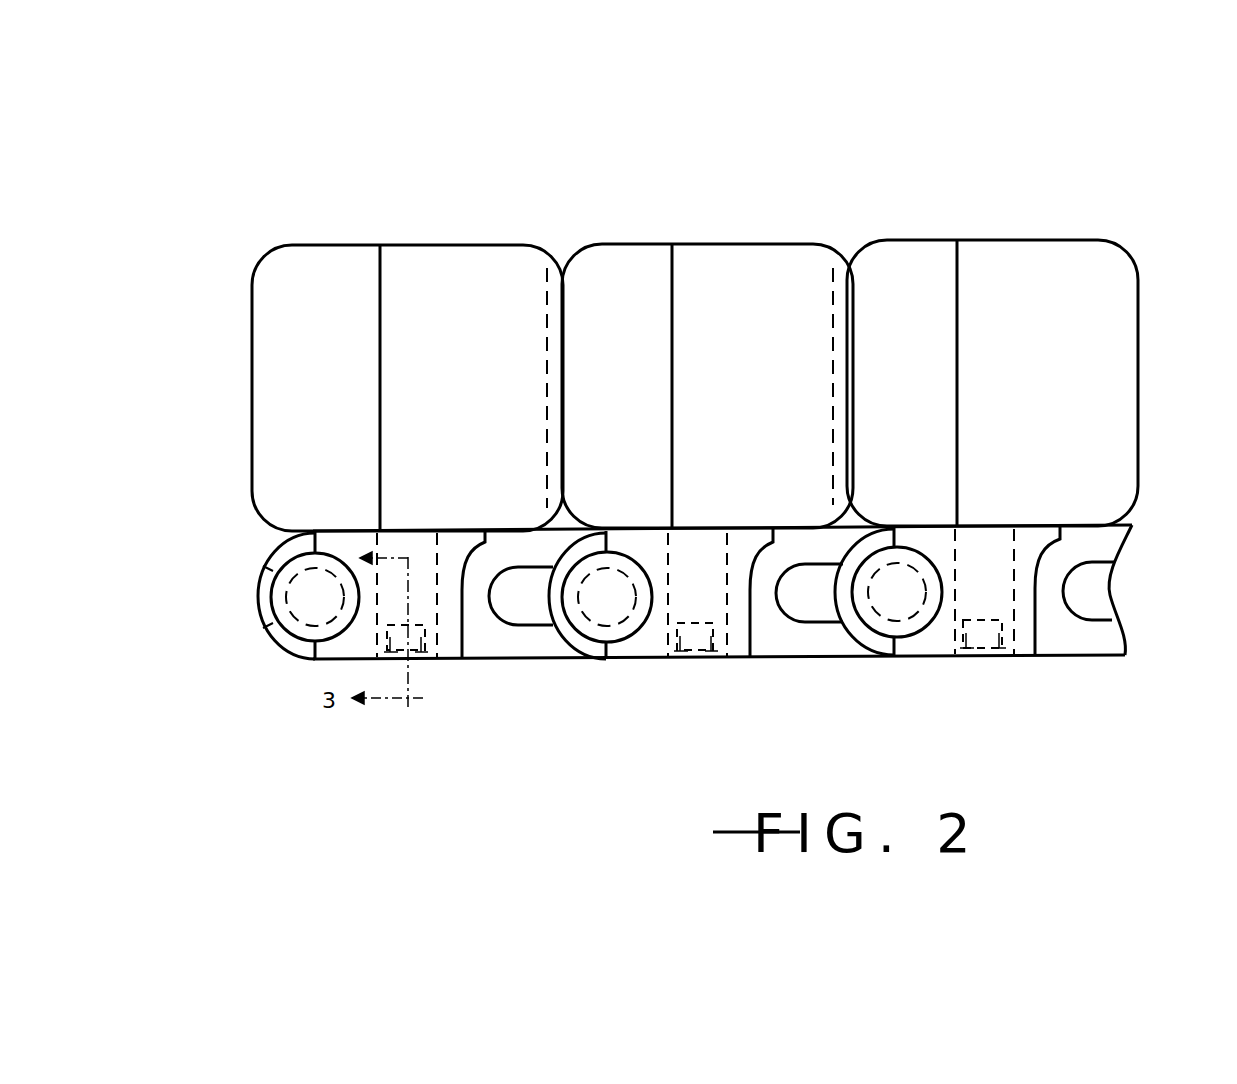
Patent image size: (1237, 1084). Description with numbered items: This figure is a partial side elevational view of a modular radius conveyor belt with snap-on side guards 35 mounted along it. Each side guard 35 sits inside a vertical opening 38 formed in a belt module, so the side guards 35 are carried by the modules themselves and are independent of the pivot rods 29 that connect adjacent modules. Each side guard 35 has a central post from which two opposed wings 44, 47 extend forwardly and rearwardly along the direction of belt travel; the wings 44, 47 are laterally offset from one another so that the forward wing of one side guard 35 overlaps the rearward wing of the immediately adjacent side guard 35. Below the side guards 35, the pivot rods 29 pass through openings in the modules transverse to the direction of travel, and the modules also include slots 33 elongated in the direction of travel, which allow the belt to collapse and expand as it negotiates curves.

The snap-on side guard 35 is at (683, 300).
The wing 44 is at (292, 334).
The wing 47 is at (495, 287).
The pivot rod 29 is at (310, 598).
The slot 33 is at (512, 596).
The vertical opening 38 is at (718, 572).